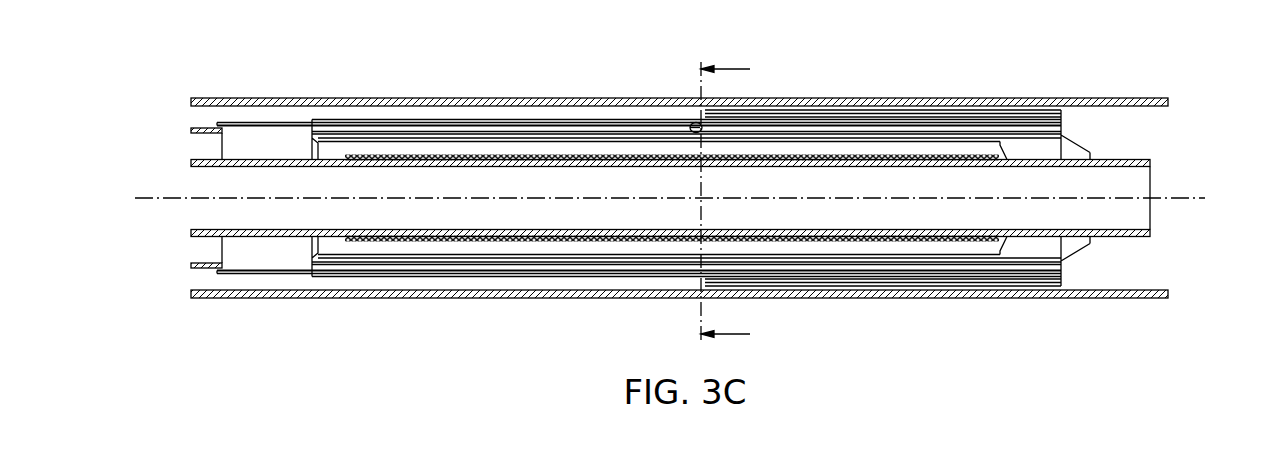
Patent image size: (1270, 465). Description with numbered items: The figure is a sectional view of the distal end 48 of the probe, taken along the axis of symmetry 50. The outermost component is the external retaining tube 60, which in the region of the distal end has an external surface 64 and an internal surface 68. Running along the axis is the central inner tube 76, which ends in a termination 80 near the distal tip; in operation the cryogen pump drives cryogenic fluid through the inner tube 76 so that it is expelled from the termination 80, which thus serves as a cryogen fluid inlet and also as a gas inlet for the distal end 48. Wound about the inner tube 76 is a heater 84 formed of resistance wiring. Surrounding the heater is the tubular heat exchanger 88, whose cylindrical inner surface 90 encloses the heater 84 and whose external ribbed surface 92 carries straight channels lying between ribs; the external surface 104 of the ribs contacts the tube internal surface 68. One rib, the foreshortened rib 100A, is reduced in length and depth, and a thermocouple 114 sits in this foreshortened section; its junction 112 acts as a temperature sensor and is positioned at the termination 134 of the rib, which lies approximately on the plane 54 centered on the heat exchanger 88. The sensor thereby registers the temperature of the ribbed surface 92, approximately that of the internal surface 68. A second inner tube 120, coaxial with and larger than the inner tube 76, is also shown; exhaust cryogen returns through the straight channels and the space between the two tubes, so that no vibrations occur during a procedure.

The distal end 48 is at (1088, 378).
The axis of symmetry 50 is at (1203, 198).
The plane 54 is at (700, 316).
The external retaining tube 60 is at (978, 299).
The external surface 64 is at (1135, 99).
The internal surface 68 is at (1134, 107).
The central inner tube 76 is at (262, 237).
The termination 80 is at (1151, 217).
The heater 84 is at (448, 158).
The heat exchanger 88 is at (480, 267).
The cylindrical inner surface 90 is at (865, 145).
The external ribbed surface 92 is at (981, 106).
The foreshortened rib 100A is at (823, 124).
The external surface of the ribs 104 is at (893, 121).
The junction 112 is at (706, 118).
The thermocouple 114 is at (281, 123).
The second inner tube 120 is at (203, 268).
The termination 134 is at (700, 118).